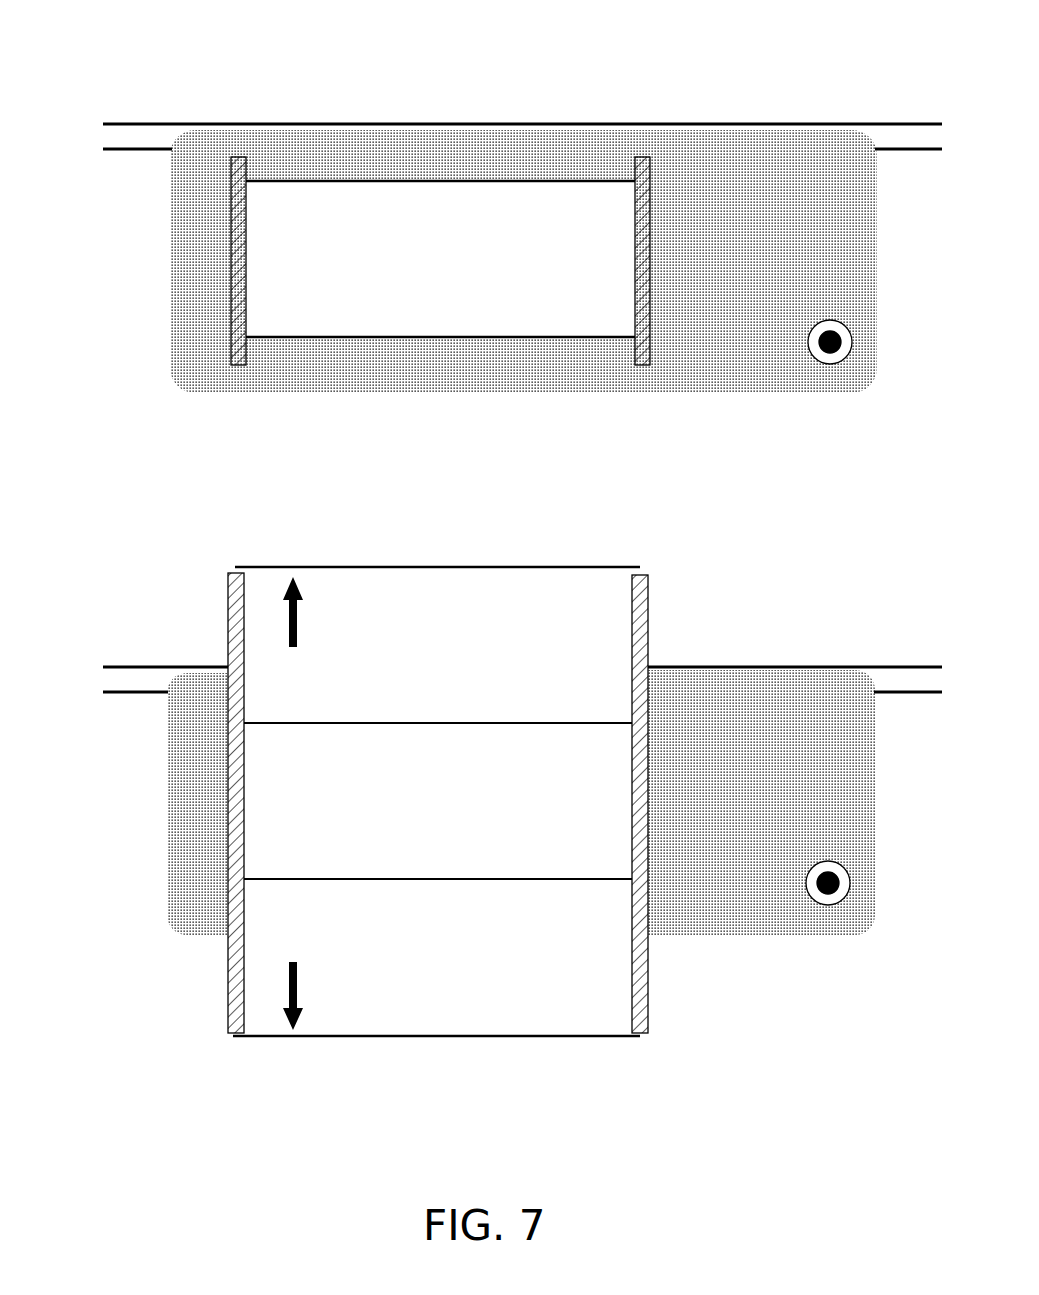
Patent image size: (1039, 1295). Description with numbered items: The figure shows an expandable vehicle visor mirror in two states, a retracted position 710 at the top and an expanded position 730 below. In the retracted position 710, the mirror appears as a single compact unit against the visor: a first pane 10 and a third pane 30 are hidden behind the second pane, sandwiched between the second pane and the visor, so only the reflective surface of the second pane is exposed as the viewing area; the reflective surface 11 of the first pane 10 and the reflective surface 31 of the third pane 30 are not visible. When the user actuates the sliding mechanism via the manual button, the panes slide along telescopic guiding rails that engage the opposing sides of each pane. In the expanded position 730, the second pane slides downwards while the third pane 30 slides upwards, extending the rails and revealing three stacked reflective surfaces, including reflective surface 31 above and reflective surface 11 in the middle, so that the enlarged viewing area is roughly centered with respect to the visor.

The retracted position 710 is at (190, 48).
The expanded position 730 is at (175, 620).
The first pane 10 is at (493, 822).
The reflective surface 11 is at (445, 817).
The third pane 30 is at (468, 617).
The reflective surface 31 is at (445, 660).